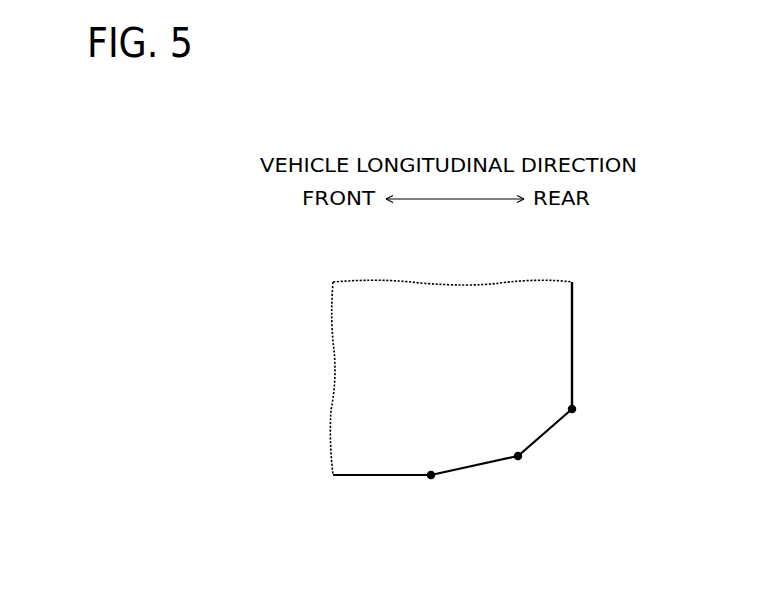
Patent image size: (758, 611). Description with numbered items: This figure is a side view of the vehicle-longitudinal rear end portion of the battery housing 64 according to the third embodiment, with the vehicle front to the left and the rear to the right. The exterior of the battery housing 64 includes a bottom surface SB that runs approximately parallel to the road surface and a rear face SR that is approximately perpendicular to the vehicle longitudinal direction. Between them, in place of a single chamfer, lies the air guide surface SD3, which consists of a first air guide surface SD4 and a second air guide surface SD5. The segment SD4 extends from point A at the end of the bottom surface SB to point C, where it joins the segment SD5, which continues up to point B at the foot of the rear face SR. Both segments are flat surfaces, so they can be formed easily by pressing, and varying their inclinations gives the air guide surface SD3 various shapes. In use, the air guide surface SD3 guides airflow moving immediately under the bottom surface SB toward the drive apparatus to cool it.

The battery housing 64 is at (488, 298).
The rear face SR is at (573, 330).
The bottom surface SB is at (371, 478).
The air guide surface SD3 is at (592, 466).
The first air guide surface SD4 is at (490, 465).
The second air guide surface SD5 is at (545, 430).